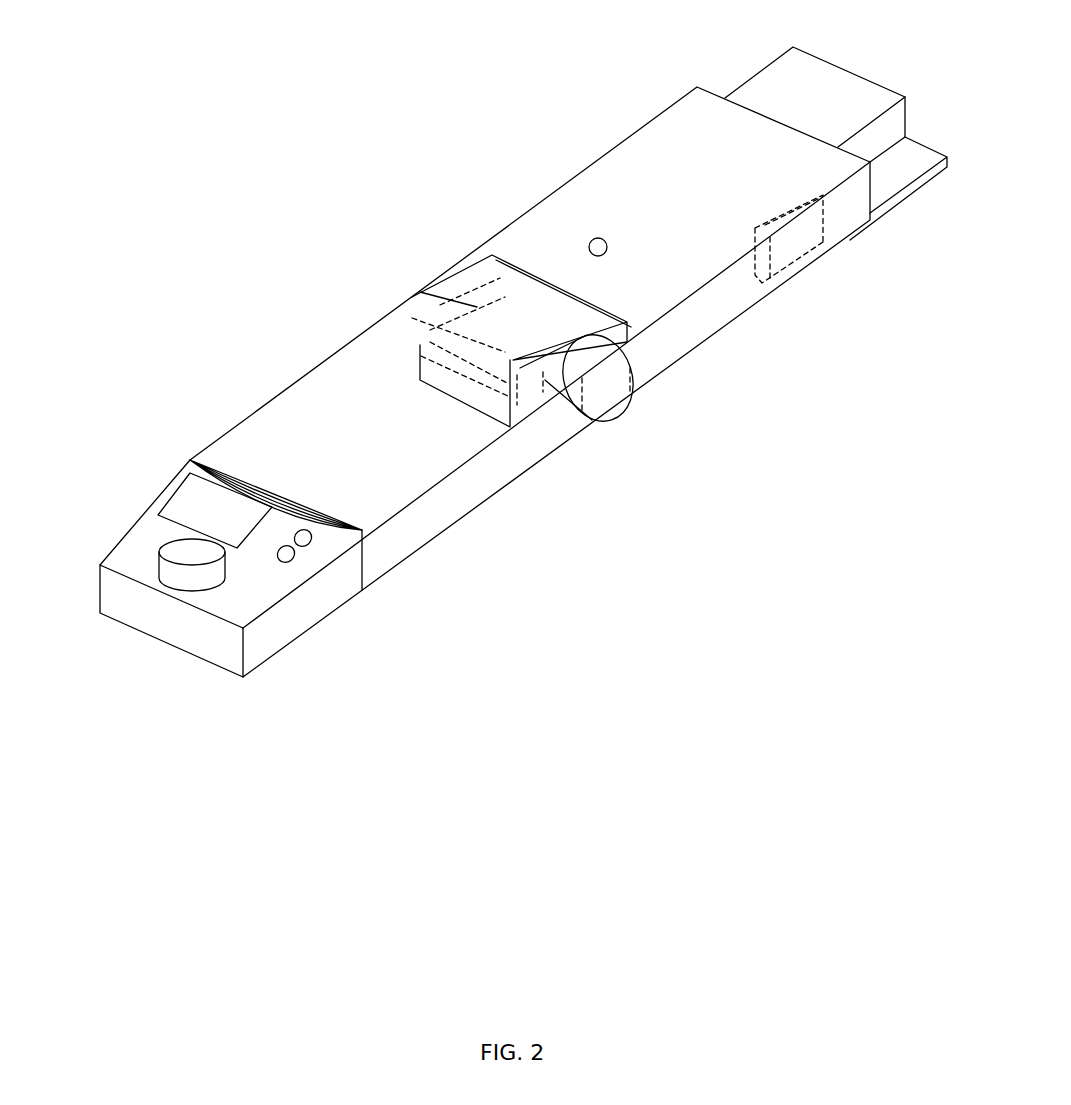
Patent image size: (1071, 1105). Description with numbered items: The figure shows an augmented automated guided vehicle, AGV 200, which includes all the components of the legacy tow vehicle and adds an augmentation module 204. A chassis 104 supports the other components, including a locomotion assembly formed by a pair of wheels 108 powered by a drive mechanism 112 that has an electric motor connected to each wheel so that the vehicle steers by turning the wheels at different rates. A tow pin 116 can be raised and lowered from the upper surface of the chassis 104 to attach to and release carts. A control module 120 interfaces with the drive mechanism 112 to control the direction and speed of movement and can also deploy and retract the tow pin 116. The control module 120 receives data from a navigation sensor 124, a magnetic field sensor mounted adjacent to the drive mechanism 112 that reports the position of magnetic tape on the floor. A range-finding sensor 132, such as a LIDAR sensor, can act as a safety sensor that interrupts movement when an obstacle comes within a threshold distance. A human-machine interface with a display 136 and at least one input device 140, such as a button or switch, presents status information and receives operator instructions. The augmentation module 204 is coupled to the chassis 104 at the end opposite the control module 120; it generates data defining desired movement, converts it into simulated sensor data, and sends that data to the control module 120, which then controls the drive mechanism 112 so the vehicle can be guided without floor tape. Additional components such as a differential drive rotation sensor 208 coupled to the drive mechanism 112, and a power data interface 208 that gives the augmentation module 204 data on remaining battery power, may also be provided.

The AGV 200 is at (242, 100).
The chassis 104 is at (300, 380).
The wheels 108 is at (612, 408).
The drive mechanism 112 is at (440, 318).
The tow pin 116 is at (590, 240).
The control module 120 is at (306, 600).
The navigation sensor 124 is at (486, 397).
The range-finding sensor 132 is at (188, 587).
The display 136 is at (185, 500).
The input device 140 is at (315, 537).
The augmentation module 204 is at (780, 93).
The differential drive rotation sensor 208 is at (497, 313).